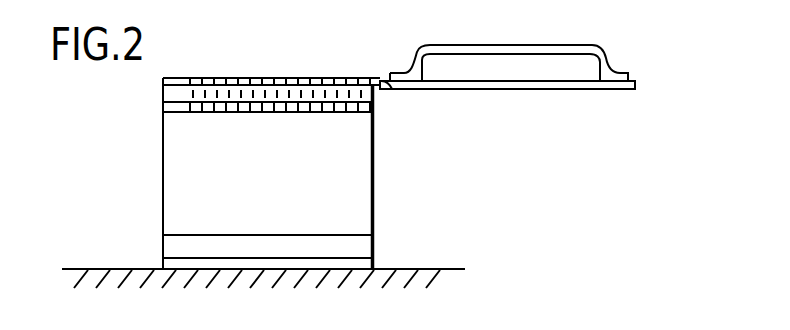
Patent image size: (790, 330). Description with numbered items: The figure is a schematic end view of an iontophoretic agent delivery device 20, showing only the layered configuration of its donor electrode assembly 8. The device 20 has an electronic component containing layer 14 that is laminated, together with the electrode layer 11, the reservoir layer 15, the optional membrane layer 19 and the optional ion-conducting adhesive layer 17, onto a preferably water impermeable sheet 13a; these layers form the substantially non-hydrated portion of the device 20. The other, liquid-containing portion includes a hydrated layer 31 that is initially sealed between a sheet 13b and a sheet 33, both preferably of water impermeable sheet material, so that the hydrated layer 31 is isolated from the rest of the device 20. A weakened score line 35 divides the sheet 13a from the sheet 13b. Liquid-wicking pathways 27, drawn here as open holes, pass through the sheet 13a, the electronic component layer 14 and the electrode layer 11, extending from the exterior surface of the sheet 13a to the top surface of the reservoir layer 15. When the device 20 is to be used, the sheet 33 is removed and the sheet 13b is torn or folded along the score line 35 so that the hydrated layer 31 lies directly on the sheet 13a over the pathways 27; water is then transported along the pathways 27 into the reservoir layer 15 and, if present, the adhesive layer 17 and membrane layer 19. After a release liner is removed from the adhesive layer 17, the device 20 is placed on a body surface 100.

The donor electrode assembly 8 is at (384, 172).
The electrode layer 11 is at (163, 108).
The sheet 13a is at (183, 79).
The sheet 13b is at (534, 91).
The electronic component containing layer 14 is at (172, 92).
The reservoir layer 15 is at (175, 183).
The ion-conducting adhesive layer 17 is at (172, 262).
The membrane layer 19 is at (175, 243).
The iontophoretic agent delivery device 20 is at (148, 163).
The liquid-wicking pathways 27 is at (337, 80).
The hydrated layer 31 is at (573, 68).
The sheet 33 is at (540, 44).
The weakened score line 35 is at (391, 91).
The body surface 100 is at (440, 269).